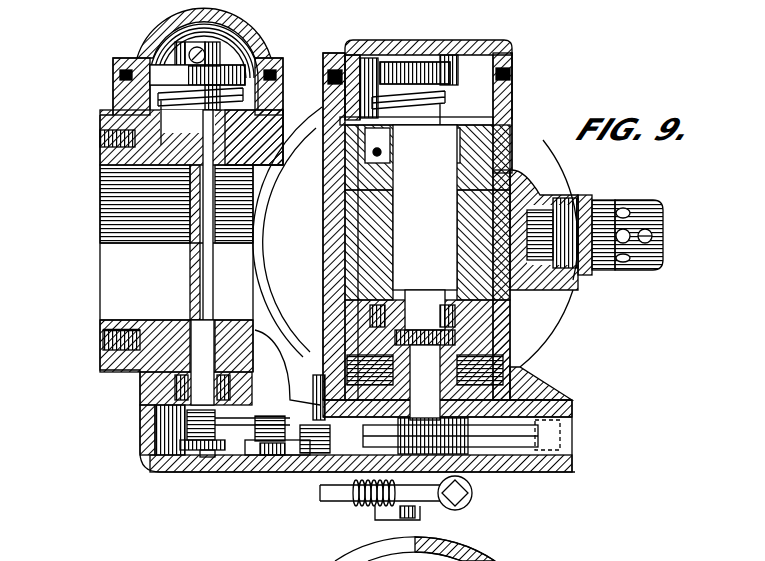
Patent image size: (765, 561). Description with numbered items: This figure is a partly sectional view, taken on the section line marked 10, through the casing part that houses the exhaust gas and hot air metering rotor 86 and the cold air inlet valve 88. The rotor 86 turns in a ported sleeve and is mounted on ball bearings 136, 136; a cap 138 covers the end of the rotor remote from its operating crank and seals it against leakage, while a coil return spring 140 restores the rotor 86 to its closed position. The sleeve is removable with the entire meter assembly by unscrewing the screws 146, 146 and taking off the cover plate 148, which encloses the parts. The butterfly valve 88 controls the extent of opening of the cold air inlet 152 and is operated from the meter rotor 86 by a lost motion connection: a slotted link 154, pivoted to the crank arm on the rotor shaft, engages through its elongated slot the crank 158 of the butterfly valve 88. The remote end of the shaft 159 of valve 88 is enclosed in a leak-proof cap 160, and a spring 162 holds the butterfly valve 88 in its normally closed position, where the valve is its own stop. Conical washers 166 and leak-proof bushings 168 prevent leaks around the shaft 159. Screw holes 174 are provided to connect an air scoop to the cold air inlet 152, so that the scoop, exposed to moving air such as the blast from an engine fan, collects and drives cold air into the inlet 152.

The section line 10 is at (114, 462).
The metering rotor 86 is at (468, 226).
The cold air inlet valve 88 is at (192, 243).
The ball bearings 136 is at (500, 122).
The cap 138 is at (483, 44).
The coil return spring 140 is at (442, 90).
The screws 146 is at (328, 466).
The cover plate 148 is at (511, 467).
The cold air inlet 152 is at (100, 240).
The slotted link 154 is at (297, 440).
The crank 158 is at (247, 418).
The shaft 159 is at (197, 350).
The leak-proof cap 160 is at (234, 33).
The spring 162 is at (197, 63).
The conical washers 166 is at (250, 146).
The leak-proof bushings 168 is at (200, 115).
The screw holes 174 is at (103, 343).